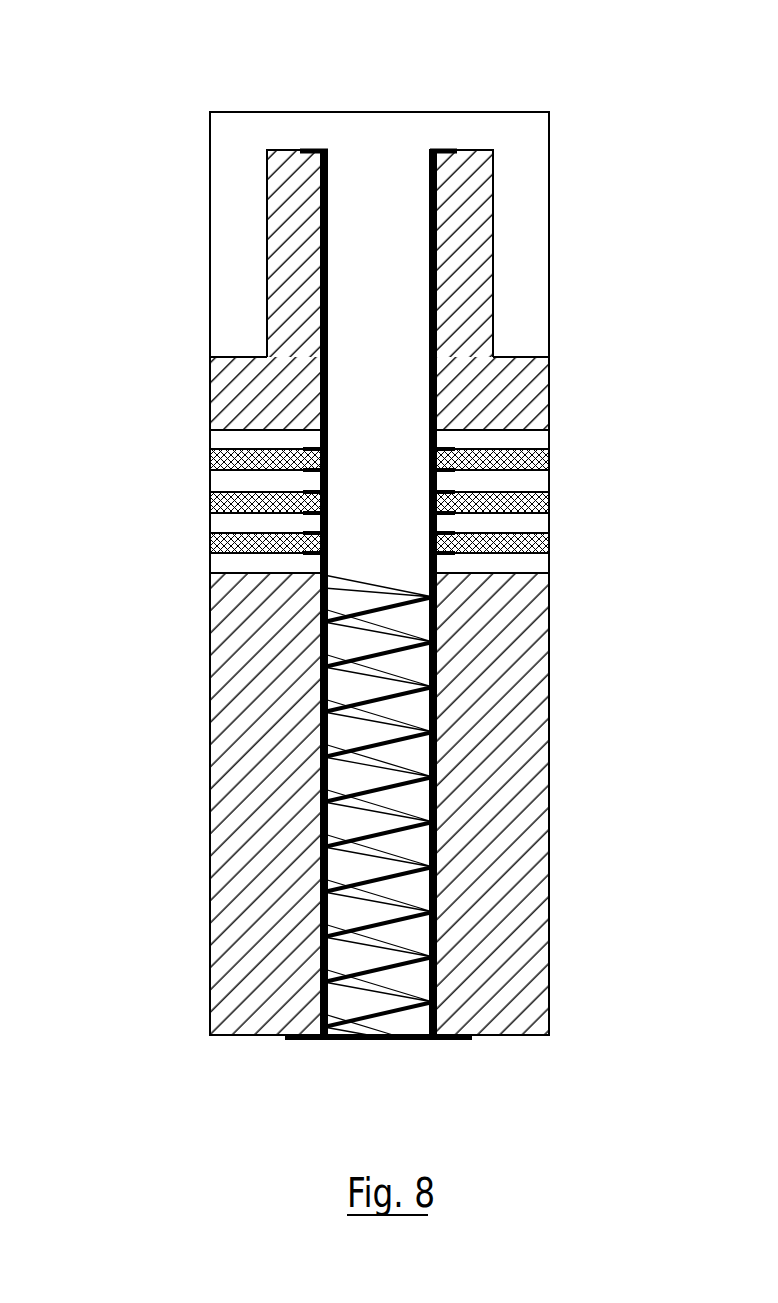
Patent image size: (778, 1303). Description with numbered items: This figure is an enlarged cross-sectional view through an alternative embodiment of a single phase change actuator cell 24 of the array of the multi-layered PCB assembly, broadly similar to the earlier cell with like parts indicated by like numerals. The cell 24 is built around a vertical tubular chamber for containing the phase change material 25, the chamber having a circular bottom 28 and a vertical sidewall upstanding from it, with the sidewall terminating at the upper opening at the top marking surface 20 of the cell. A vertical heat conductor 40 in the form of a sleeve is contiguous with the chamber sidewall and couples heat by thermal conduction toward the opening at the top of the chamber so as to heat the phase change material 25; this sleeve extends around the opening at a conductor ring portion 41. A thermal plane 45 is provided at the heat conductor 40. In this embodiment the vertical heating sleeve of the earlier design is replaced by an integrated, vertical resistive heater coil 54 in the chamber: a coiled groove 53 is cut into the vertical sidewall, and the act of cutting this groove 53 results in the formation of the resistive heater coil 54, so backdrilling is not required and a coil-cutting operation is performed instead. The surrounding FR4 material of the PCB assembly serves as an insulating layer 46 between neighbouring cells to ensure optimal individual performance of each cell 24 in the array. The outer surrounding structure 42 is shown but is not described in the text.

The top marking surface 20 is at (440, 150).
The phase change actuator cell 24 is at (145, 748).
The phase change material 25 is at (398, 570).
The circular bottom 28 is at (392, 1037).
The vertical heat conductor 40 is at (320, 223).
The conductor ring portion 41 is at (288, 168).
The cap 42 is at (528, 152).
The thermal plane 45 is at (500, 435).
The insulating layer 46 is at (508, 692).
The coiled groove 53 is at (422, 932).
The resistive heater coil 54 is at (400, 786).